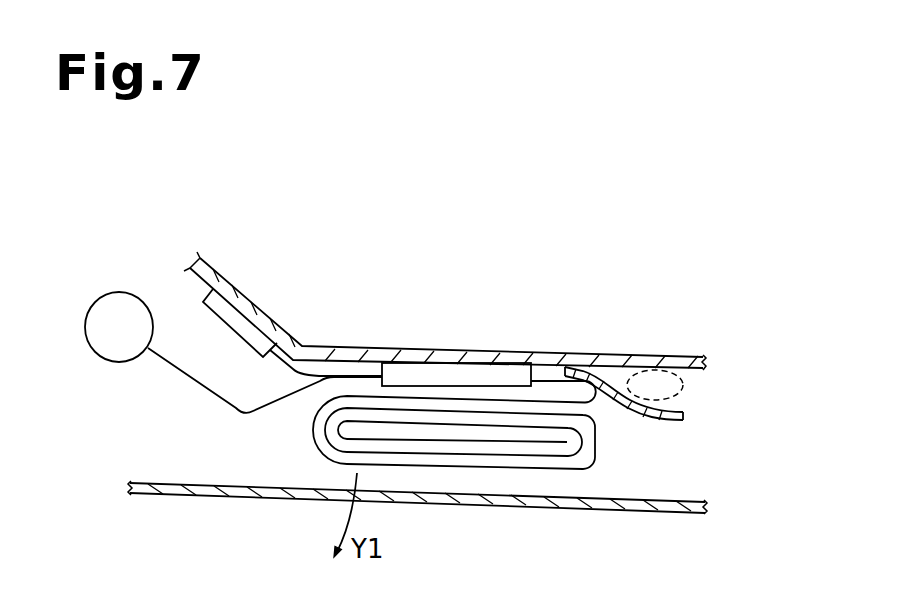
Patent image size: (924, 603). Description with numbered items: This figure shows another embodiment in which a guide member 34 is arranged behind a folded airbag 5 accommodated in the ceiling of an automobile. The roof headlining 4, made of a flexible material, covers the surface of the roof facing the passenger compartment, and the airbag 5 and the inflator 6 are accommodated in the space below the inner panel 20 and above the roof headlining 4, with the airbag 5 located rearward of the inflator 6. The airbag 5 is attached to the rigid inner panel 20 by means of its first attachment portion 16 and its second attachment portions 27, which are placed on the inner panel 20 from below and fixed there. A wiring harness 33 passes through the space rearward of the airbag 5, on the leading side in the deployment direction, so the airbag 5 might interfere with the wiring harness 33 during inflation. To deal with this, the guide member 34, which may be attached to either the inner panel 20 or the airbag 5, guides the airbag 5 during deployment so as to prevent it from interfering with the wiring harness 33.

The roof headlining 4 is at (632, 512).
The airbag 5 is at (311, 437).
The inflator 6 is at (101, 294).
The first attachment portion 16 is at (235, 332).
The inner panel 20 is at (216, 275).
The second attachment portions 27 is at (468, 373).
The wiring harness 33 is at (683, 388).
The guide member 34 is at (652, 418).